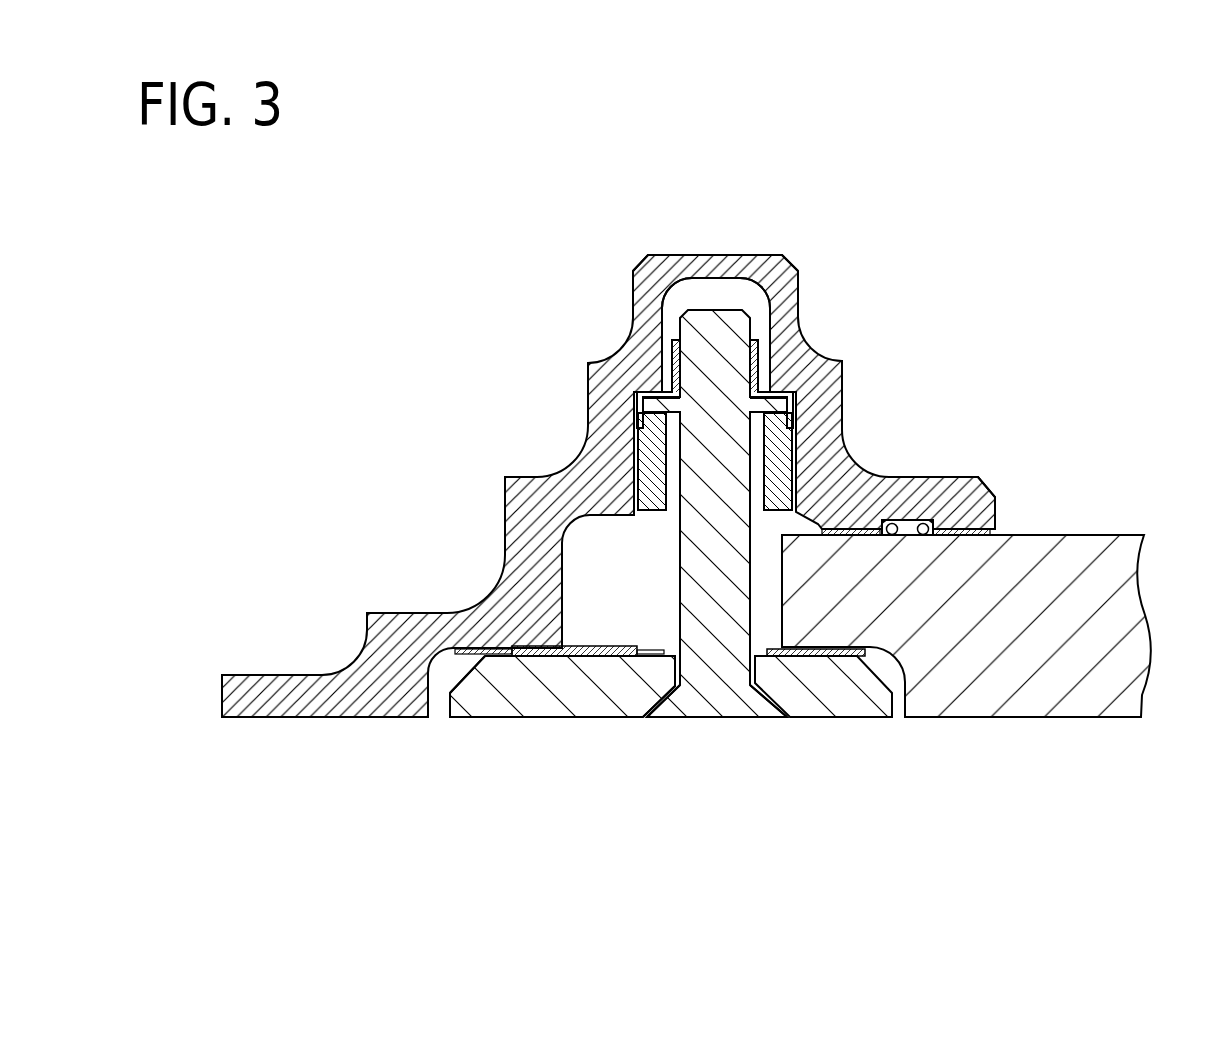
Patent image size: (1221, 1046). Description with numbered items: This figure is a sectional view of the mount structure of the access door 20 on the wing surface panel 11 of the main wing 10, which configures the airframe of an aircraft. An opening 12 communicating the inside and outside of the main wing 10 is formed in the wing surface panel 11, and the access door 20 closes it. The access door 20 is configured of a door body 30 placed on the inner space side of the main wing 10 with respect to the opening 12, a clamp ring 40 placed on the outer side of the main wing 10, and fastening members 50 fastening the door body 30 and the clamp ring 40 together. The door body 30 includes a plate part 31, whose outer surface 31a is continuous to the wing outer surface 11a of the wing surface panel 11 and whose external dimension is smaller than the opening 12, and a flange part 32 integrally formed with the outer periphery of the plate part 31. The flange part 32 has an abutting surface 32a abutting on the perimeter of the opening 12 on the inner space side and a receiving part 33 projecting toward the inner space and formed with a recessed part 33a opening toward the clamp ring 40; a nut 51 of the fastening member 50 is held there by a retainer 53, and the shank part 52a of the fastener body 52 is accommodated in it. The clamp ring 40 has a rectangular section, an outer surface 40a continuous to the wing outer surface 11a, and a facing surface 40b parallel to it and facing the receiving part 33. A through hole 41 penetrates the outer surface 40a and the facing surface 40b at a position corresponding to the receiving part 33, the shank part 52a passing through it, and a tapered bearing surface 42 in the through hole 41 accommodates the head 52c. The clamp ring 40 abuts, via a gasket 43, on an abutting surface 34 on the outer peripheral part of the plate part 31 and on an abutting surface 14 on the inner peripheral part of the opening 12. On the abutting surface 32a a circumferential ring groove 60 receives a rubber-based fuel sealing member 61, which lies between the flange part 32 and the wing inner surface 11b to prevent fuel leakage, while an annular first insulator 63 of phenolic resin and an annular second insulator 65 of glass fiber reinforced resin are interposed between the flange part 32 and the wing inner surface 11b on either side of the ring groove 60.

The main wing 10 is at (966, 634).
The wing surface panel 11 is at (966, 627).
The wing outer surface 11a is at (1040, 718).
The wing inner surface 11b is at (1055, 535).
The opening 12 is at (740, 660).
The abutting surface 14 is at (841, 710).
The access door 20 is at (620, 485).
The door body 30 is at (620, 485).
The plate part 31 is at (268, 718).
The outer surface 31a is at (340, 718).
The flange part 32 is at (946, 477).
The abutting surface 32a is at (1000, 529).
The receiving part 33 is at (690, 255).
The recessed part 33a is at (668, 333).
The abutting surface 34 is at (528, 656).
The clamp ring 40 is at (671, 687).
The outer surface 40a is at (835, 700).
The facing surface 40b is at (612, 660).
The through hole 41 is at (690, 685).
The tapered bearing surface 42 is at (655, 705).
The gasket 43 is at (598, 646).
The fastening member 50 is at (693, 502).
The nut 51 is at (672, 370).
The fastener body 52 is at (693, 524).
The shank part 52a is at (690, 418).
The head 52c is at (775, 690).
The retainer 53 is at (650, 512).
The ring groove 60 is at (911, 641).
The fuel sealing member 61 is at (892, 537).
The first insulator 63 is at (960, 537).
The second insulator 65 is at (878, 657).